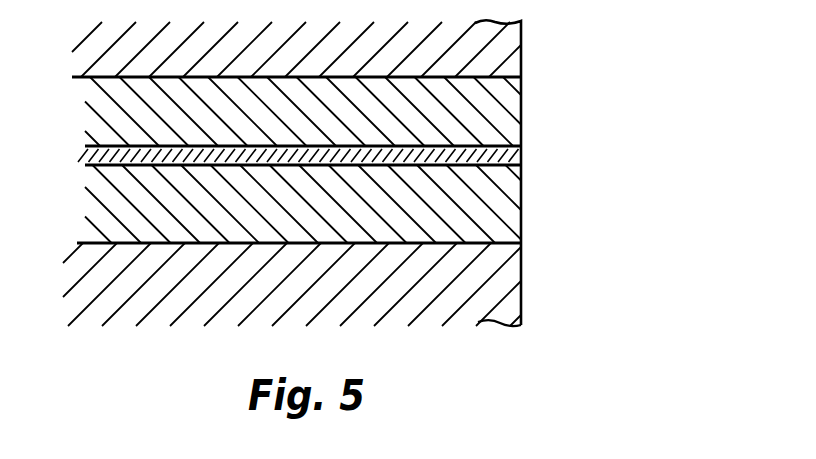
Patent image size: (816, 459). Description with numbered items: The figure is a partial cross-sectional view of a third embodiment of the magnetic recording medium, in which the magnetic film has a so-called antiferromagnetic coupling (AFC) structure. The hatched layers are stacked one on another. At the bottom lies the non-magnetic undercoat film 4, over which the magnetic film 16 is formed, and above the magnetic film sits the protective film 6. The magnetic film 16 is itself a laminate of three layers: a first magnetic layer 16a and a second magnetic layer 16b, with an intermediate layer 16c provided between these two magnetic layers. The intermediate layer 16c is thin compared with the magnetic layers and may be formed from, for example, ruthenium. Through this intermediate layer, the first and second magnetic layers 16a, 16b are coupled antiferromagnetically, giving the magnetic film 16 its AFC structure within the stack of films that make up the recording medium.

The protective film 6 is at (522, 43).
The magnetic film 16 is at (410, 160).
The first magnetic layer 16a is at (522, 98).
The intermediate layer 16c is at (522, 155).
The second magnetic layer 16b is at (377, 204).
The non-magnetic undercoat film 4 is at (515, 268).